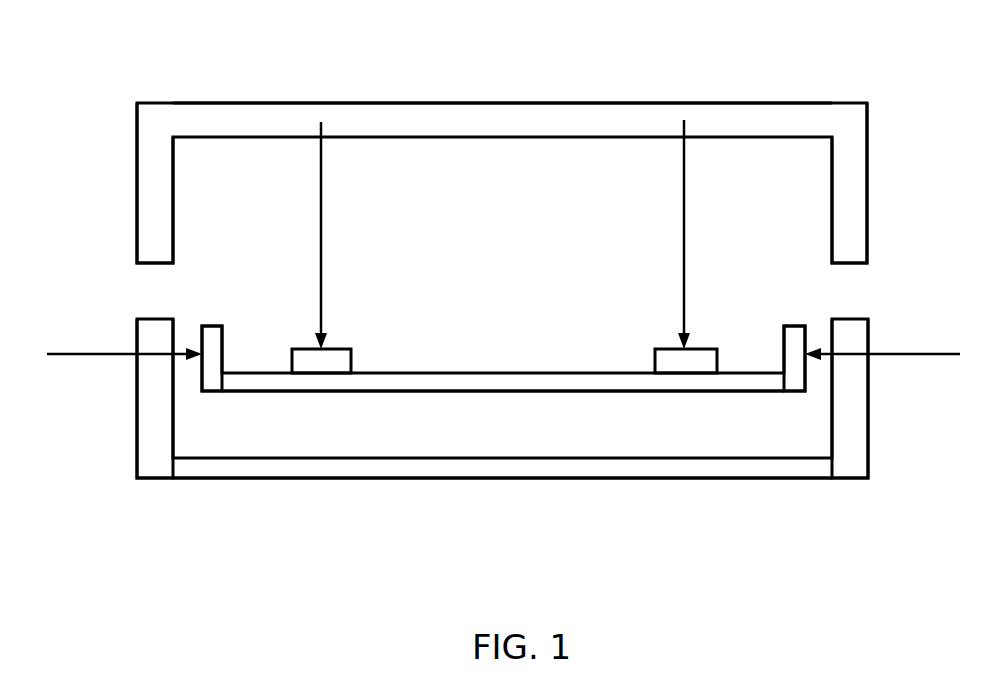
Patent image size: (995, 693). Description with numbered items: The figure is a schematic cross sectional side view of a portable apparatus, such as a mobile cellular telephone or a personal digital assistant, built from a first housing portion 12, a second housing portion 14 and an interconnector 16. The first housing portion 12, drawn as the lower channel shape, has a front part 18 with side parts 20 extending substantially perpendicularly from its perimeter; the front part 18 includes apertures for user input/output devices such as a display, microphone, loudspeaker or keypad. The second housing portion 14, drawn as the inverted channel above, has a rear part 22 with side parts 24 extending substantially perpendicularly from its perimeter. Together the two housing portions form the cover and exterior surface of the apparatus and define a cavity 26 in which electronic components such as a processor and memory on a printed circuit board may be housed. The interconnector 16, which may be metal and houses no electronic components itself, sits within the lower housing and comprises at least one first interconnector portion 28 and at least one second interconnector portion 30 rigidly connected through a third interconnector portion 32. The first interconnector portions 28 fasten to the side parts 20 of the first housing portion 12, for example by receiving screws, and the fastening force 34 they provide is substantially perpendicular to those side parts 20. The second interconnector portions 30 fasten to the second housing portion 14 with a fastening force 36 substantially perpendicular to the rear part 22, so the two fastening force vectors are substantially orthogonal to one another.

The first housing portion 12 is at (565, 480).
The second housing portion 14 is at (291, 102).
The interconnector 16 is at (514, 358).
The front part 18 is at (422, 470).
The side parts 20 is at (152, 394).
The rear part 22 is at (450, 120).
The side parts 24 is at (150, 172).
The cavity 26 is at (502, 200).
The first interconnector portion 28 is at (217, 345).
The second interconnector portion 30 is at (345, 360).
The third interconnector portion 32 is at (455, 385).
The fastening force 34 is at (80, 353).
The fastening force 36 is at (322, 173).